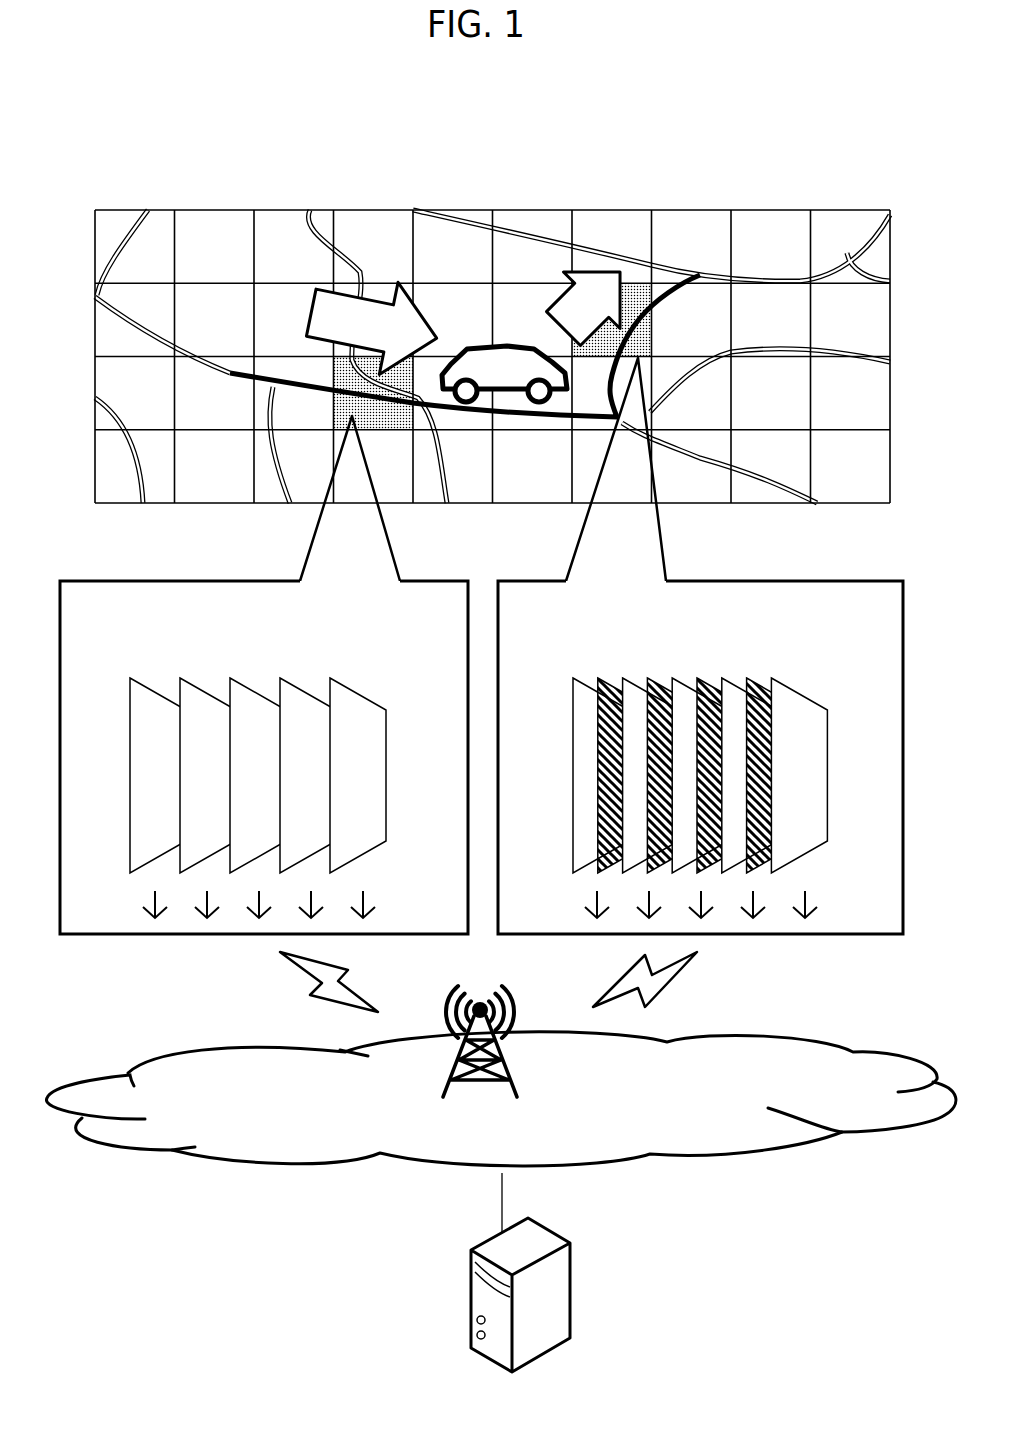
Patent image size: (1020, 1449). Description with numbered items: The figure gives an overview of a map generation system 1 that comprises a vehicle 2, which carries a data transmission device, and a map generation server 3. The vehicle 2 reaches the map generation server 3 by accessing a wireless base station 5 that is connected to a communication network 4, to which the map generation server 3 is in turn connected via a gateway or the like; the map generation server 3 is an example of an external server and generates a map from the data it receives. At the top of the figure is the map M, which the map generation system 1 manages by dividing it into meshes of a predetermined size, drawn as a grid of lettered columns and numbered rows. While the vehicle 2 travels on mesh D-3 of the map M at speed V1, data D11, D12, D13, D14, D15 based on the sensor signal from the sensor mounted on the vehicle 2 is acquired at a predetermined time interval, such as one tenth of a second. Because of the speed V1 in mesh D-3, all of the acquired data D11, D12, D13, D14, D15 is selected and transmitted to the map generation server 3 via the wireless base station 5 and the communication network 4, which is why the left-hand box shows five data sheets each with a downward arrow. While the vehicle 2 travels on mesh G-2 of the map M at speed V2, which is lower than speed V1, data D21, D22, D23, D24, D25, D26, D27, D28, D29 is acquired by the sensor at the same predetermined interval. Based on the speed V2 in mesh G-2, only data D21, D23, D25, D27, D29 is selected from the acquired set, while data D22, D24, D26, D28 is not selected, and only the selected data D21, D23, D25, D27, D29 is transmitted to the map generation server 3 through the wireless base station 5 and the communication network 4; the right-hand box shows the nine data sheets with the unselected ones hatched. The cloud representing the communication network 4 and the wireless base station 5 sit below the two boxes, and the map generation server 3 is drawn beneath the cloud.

The map generation system 1 is at (152, 117).
The vehicle 2 is at (507, 346).
The map generation server 3 is at (570, 1292).
The communication network 4 is at (830, 1046).
The wireless base station 5 is at (540, 1012).
The map M is at (887, 206).
The speed V1 is at (374, 326).
The speed V2 is at (591, 300).
The data D11 is at (147, 686).
The data D12 is at (197, 686).
The data D13 is at (247, 686).
The data D14 is at (297, 686).
The data D15 is at (347, 686).
The data D21 is at (580, 686).
The data D22 is at (605, 686).
The data D23 is at (630, 686).
The data D24 is at (655, 686).
The data D25 is at (680, 686).
The data D26 is at (705, 686).
The data D27 is at (730, 686).
The data D28 is at (754, 686).
The data D29 is at (780, 686).